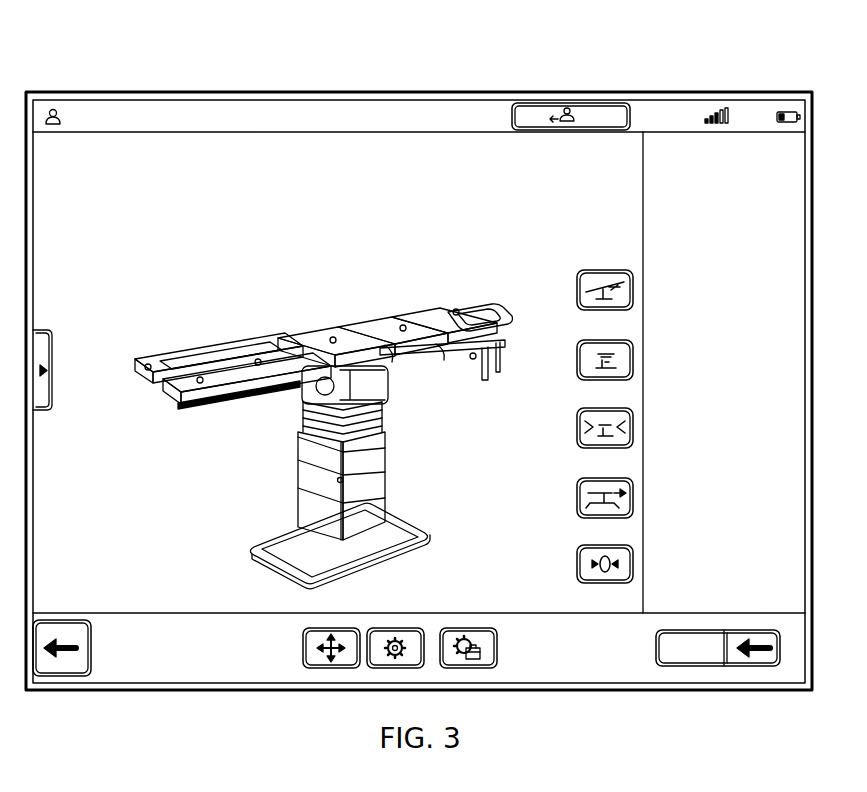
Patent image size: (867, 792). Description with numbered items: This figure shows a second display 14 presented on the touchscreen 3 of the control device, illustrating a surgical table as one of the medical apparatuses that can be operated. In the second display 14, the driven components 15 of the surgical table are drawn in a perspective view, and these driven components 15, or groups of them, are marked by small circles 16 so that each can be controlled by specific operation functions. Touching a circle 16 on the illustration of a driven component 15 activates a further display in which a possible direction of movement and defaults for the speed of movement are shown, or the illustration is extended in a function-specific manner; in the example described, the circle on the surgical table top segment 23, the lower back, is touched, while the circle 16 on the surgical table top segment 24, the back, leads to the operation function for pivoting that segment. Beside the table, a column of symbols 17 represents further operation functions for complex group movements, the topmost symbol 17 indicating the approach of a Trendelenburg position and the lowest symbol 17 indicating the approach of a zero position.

The touchscreen 3 is at (98, 48).
The second display 14 is at (485, 86).
The driven components 15 is at (192, 360).
The small circles 16 is at (146, 363).
The symbols 17 is at (576, 288).
The surgical table top segment (lower back) 23 is at (392, 347).
The surgical table top segment (back) 24 is at (440, 346).